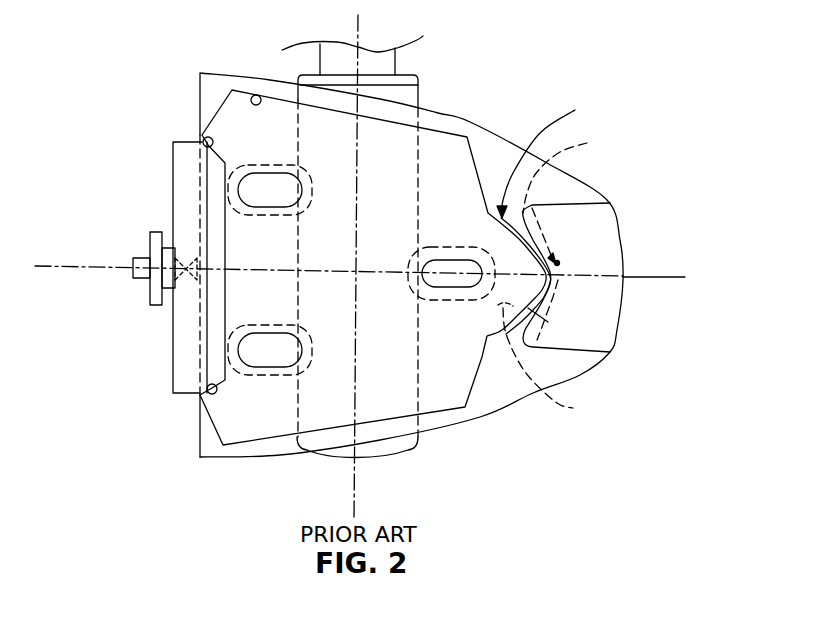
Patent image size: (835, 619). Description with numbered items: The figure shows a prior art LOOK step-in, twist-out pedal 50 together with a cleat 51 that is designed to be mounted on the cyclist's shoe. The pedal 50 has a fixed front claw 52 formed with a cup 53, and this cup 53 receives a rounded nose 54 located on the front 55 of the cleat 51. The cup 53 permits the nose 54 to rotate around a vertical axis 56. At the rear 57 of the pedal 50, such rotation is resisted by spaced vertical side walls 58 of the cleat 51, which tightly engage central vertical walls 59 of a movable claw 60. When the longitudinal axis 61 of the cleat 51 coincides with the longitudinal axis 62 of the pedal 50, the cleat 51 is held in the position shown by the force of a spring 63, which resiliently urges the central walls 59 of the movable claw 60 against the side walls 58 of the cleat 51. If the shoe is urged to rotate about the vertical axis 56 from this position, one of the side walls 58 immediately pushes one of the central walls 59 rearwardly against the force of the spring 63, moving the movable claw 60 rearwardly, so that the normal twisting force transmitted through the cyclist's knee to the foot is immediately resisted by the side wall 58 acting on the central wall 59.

The pedal 50 is at (457, 115).
The cleat 51 is at (257, 95).
The fixed front claw 52 is at (582, 220).
The cup 53 is at (587, 143).
The rounded nose 54 is at (550, 365).
The front 55 is at (550, 157).
The vertical axis 56 is at (552, 274).
The rear 57 is at (252, 458).
The side walls 58 is at (205, 146).
The central vertical walls 59 is at (204, 138).
The movable claw 60 is at (185, 227).
The longitudinal axis of the cleat 61 is at (57, 267).
The longitudinal axis of the pedal 62 is at (680, 277).
The spring 63 is at (187, 280).